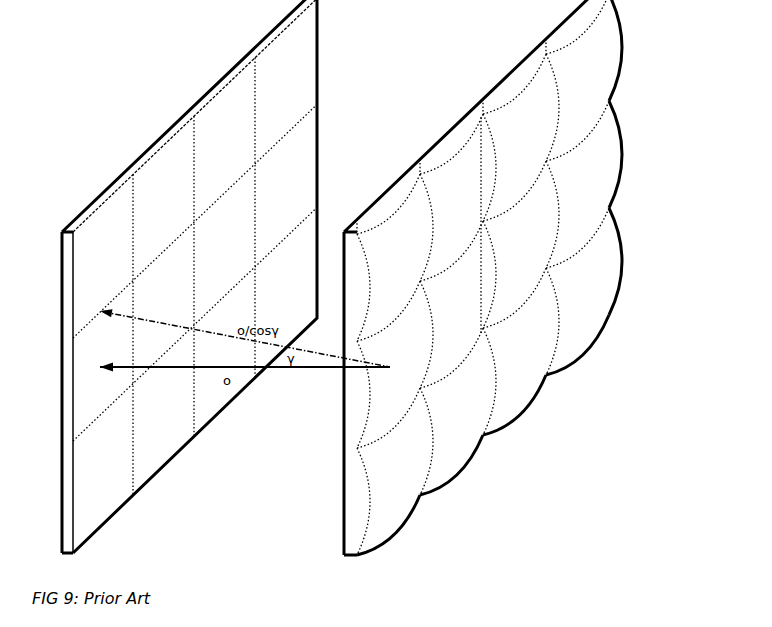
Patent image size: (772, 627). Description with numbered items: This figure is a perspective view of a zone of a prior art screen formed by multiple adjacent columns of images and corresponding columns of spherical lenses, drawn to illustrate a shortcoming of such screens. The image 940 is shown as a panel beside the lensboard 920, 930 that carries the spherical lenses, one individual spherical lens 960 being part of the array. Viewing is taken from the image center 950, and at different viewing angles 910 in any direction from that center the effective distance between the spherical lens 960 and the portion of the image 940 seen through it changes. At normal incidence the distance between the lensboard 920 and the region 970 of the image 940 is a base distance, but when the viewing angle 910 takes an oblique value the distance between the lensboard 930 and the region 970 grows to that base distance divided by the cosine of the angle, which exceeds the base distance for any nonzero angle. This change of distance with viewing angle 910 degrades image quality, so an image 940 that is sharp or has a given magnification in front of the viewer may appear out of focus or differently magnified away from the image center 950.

The viewing angle 910 is at (204, 276).
The lensboard 920 is at (465, 289).
The lensboard 930 is at (176, 288).
The image 940 is at (195, 277).
The image center 950 is at (241, 360).
The spherical lens 960 is at (489, 277).
The region of the image 970 is at (235, 325).